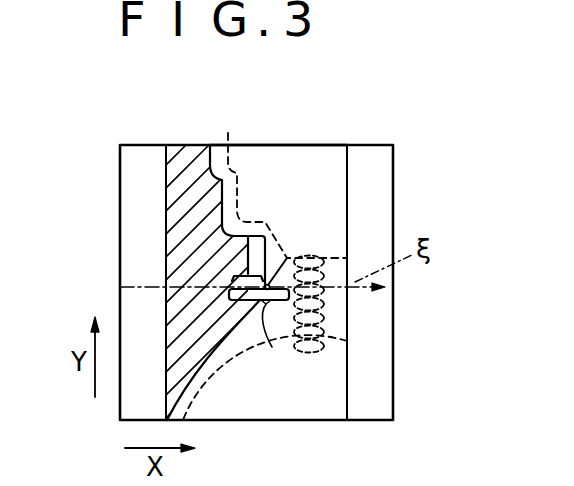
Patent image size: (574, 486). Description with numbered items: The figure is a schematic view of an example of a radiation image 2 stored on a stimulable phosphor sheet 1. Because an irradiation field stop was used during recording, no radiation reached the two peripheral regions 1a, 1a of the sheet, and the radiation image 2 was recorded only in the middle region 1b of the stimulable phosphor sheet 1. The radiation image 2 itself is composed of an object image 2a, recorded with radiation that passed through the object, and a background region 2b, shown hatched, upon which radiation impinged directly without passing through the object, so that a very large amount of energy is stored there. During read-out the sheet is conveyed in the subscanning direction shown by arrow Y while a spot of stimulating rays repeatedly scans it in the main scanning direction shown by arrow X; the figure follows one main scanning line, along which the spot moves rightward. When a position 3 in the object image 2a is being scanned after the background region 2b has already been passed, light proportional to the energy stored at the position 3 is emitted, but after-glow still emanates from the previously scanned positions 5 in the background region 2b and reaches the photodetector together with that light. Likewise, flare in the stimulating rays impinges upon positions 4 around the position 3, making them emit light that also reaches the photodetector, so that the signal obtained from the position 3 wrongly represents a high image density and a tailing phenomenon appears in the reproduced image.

The stimulable phosphor sheet 1 is at (396, 139).
The peripheral regions 1a is at (122, 172).
The middle region 1b is at (262, 142).
The radiation image 2 is at (219, 249).
The object image 2a is at (313, 146).
The background region 2b is at (177, 232).
The position 3 is at (286, 257).
The positions 4 is at (272, 347).
The positions 5 is at (252, 218).